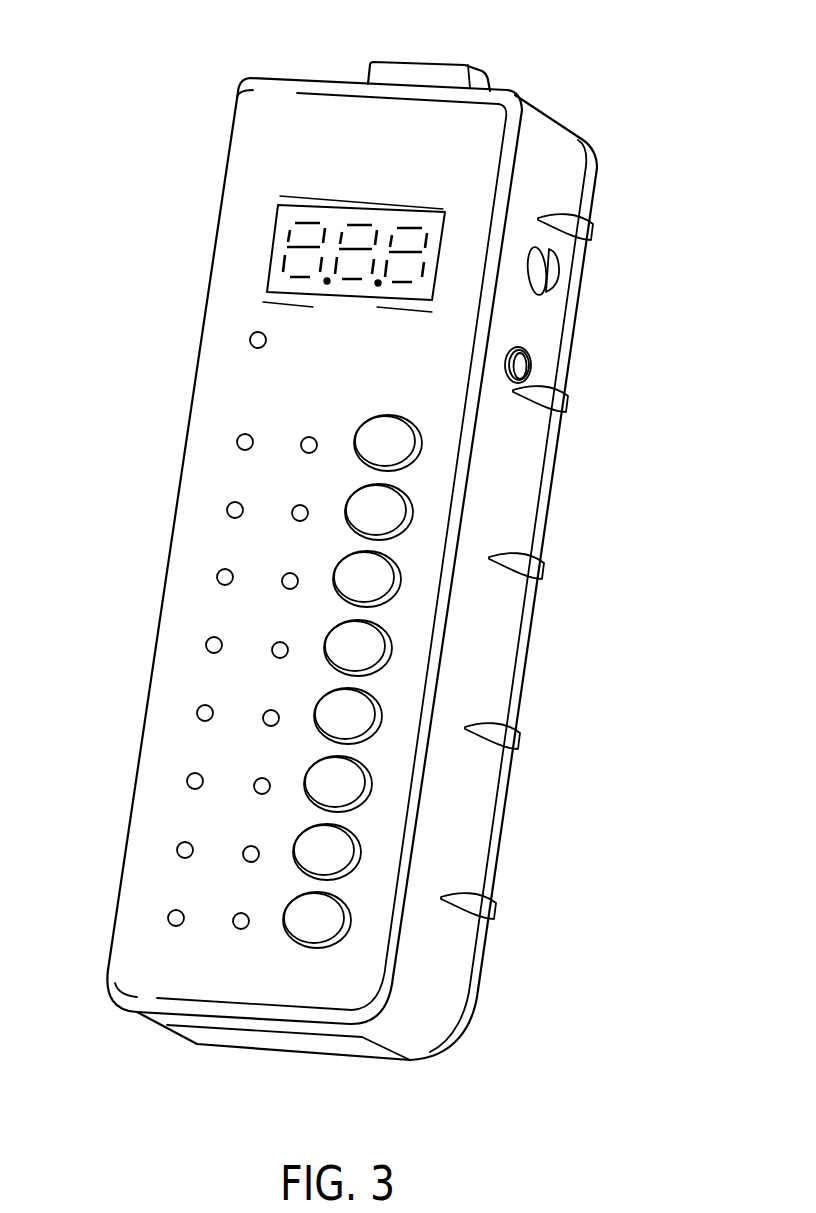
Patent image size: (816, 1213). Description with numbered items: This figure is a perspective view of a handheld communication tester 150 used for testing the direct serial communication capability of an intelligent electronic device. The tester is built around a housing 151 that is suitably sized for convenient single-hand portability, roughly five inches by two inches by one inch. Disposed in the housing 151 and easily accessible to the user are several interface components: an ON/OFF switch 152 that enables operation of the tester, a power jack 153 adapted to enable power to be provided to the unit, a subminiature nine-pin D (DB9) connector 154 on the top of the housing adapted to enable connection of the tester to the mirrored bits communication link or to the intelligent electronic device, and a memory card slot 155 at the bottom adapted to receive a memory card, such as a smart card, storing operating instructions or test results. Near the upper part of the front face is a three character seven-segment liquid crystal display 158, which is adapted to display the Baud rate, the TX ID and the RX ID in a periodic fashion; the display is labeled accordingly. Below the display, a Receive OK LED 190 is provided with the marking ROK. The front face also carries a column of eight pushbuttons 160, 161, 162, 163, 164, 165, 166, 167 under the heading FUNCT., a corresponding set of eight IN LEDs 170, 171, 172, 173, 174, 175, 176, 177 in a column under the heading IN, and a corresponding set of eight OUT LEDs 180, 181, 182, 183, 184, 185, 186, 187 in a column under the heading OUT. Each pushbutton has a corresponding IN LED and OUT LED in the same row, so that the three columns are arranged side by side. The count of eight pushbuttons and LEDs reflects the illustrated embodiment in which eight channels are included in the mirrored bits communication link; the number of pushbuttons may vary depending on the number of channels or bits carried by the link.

The handheld communication tester 150 is at (661, 71).
The housing 151 is at (467, 820).
The ON/OFF switch 152 is at (560, 271).
The power jack 153 is at (530, 363).
The subminiature 9-pin D (DB9) connector 154 is at (423, 66).
The memory card slot 155 is at (272, 1043).
The three character 7-segment liquid crystal display (LCD) 158 is at (282, 252).
The pushbutton 160 is at (403, 452).
The pushbutton 161 is at (394, 521).
The pushbutton 162 is at (382, 588).
The pushbutton 163 is at (373, 657).
The pushbutton 164 is at (363, 725).
The pushbutton 165 is at (353, 793).
The pushbutton 166 is at (342, 861).
The pushbutton 167 is at (332, 929).
The IN LED 170 is at (237, 442).
The IN LED 171 is at (227, 510).
The IN LED 172 is at (217, 577).
The IN LED 173 is at (206, 645).
The IN LED 174 is at (197, 713).
The IN LED 175 is at (187, 781).
The IN LED 176 is at (177, 850).
The IN LED 177 is at (168, 918).
The OUT LED 180 is at (303, 451).
The OUT LED 181 is at (294, 519).
The OUT LED 182 is at (284, 587).
The OUT LED 183 is at (274, 656).
The OUT LED 184 is at (265, 724).
The OUT LED 185 is at (256, 792).
The OUT LED 186 is at (245, 860).
The OUT LED 187 is at (235, 927).
The Receive OK LED 190 is at (250, 337).